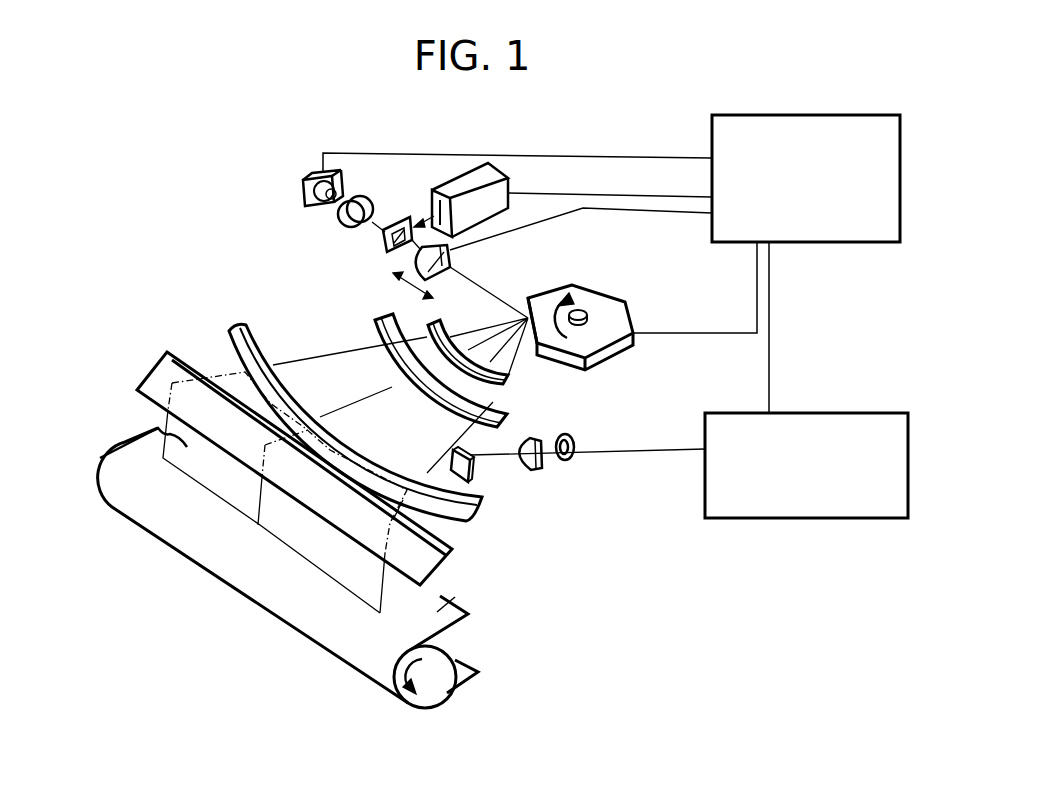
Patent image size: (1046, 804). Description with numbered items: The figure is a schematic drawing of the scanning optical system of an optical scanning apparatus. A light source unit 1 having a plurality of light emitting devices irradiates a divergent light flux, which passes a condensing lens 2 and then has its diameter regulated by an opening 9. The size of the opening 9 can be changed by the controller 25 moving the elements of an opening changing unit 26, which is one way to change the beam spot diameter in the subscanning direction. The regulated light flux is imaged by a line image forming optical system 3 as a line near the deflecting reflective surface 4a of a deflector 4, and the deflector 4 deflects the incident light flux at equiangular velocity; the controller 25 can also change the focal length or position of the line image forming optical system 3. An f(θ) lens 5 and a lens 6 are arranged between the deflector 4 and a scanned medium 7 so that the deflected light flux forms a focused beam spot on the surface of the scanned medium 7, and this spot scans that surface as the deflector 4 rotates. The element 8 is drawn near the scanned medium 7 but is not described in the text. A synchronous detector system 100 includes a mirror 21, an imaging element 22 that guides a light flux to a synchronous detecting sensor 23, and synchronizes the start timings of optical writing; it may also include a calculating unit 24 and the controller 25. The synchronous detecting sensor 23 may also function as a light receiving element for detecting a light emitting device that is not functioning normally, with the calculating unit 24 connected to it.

The light source unit 1 is at (302, 193).
The condensing lens 2 is at (344, 228).
The opening (aperture) 9 is at (386, 240).
The opening changing unit 26 is at (502, 165).
The line image forming optical system 3 is at (452, 262).
The deflector 4 is at (610, 310).
The deflecting reflective surface 4a is at (526, 300).
The f(θ) lens 5 is at (516, 367).
The lens 6 is at (288, 390).
The scanned medium 7 is at (457, 597).
The reflecting mirror 8 is at (440, 560).
The mirror 21 is at (473, 479).
The imaging element 22 is at (533, 440).
The synchronous detecting sensor 23 is at (572, 458).
The calculating unit 24 is at (808, 518).
The controller 25 is at (812, 113).
The synchronous detector system 100 is at (603, 511).